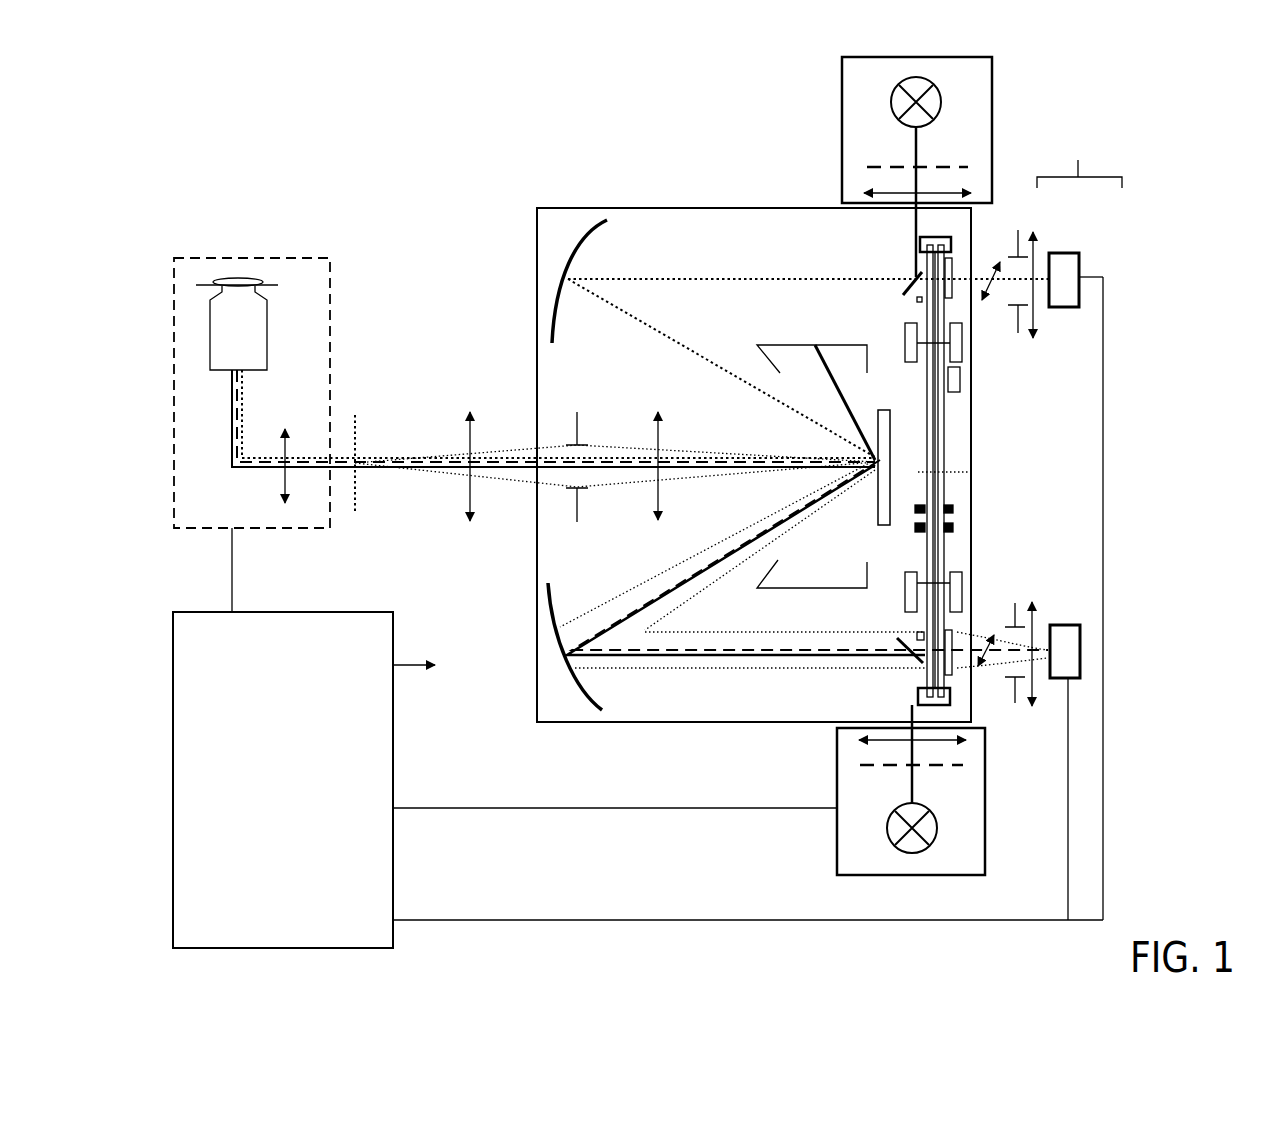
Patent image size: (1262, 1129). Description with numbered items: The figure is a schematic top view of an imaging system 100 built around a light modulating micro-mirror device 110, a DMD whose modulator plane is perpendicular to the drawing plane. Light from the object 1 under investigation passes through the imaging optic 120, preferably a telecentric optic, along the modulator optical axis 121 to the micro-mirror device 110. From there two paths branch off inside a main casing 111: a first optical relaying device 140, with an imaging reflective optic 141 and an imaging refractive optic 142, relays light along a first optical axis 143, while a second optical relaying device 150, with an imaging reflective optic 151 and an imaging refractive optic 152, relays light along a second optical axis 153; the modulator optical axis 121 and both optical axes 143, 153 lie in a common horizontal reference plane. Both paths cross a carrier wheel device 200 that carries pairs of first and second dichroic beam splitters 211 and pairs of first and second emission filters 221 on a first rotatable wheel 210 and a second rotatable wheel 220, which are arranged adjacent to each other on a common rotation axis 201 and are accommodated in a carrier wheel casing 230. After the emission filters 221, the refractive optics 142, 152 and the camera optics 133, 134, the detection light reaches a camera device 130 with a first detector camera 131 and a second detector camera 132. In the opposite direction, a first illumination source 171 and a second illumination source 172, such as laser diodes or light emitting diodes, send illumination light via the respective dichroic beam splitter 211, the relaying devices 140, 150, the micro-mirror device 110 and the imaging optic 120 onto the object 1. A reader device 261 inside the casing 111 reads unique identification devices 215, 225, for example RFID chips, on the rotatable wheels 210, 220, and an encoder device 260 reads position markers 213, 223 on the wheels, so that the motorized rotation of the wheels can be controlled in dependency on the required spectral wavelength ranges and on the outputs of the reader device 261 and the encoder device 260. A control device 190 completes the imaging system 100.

The imaging system 100 is at (296, 194).
The object 1 is at (260, 282).
The imaging optic 120 is at (390, 358).
The modulator optical axis 121 is at (397, 470).
The main casing 111 is at (537, 373).
The imaging reflective optic 141 is at (567, 262).
The first optical relaying device 140 is at (661, 257).
The first optical axis 143 is at (640, 280).
The light modulating micro-mirror device 110 is at (877, 500).
The position marker 213 is at (915, 523).
The dichroic beam splitter 211 is at (900, 276).
The unique identification device 215 is at (917, 298).
The reader device 261 is at (905, 343).
The unique identification device 225 is at (962, 343).
The first rotatable wheel 210 is at (927, 408).
The second rotatable wheel 220 is at (944, 400).
The carrier wheel device 200 is at (942, 458).
The common rotation axis 201 is at (970, 472).
The position marker 223 is at (953, 522).
The encoder device 260 is at (960, 380).
The imaging refractive optic 142 is at (992, 265).
The emission filter 221 is at (963, 288).
The camera optic 133 is at (1028, 310).
The first detector camera 131 is at (1070, 272).
The camera device 130 is at (1105, 152).
The first illumination source 171 is at (940, 103).
The second illumination source 172 is at (918, 848).
The second optical relaying device 150 is at (665, 712).
The imaging reflective optic 151 is at (565, 665).
The second optical axis 153 is at (750, 655).
The imaging refractive optic 152 is at (985, 655).
The second detector camera 132 is at (1072, 667).
The camera optic 134 is at (1028, 678).
The carrier wheel casing 230 is at (937, 700).
The control device 190 is at (249, 935).